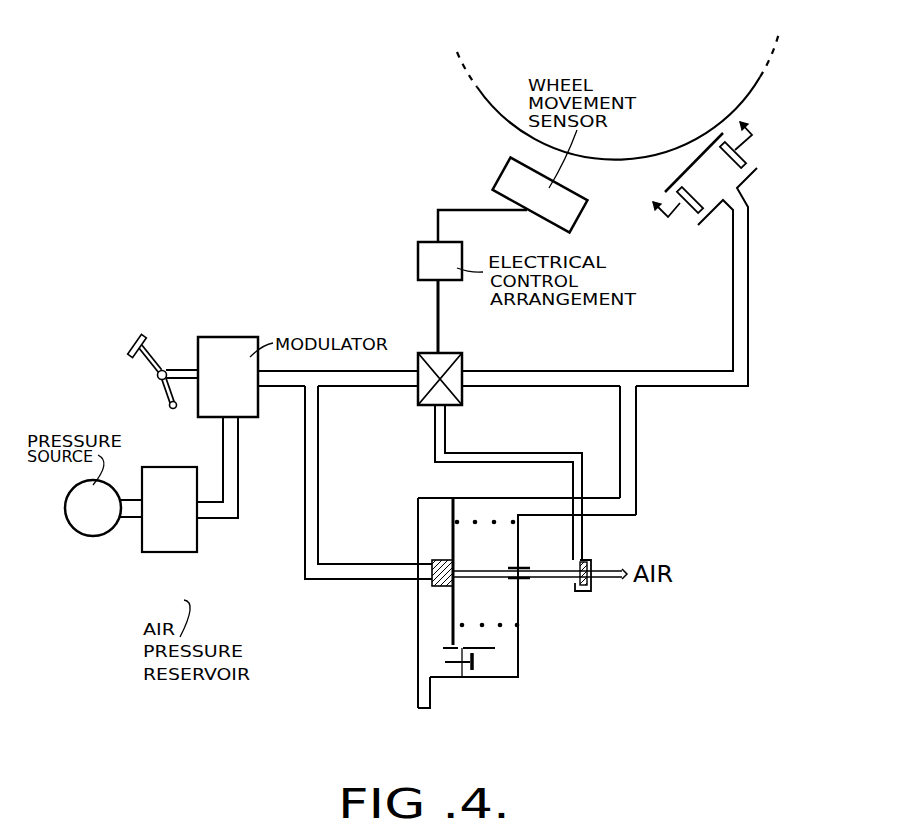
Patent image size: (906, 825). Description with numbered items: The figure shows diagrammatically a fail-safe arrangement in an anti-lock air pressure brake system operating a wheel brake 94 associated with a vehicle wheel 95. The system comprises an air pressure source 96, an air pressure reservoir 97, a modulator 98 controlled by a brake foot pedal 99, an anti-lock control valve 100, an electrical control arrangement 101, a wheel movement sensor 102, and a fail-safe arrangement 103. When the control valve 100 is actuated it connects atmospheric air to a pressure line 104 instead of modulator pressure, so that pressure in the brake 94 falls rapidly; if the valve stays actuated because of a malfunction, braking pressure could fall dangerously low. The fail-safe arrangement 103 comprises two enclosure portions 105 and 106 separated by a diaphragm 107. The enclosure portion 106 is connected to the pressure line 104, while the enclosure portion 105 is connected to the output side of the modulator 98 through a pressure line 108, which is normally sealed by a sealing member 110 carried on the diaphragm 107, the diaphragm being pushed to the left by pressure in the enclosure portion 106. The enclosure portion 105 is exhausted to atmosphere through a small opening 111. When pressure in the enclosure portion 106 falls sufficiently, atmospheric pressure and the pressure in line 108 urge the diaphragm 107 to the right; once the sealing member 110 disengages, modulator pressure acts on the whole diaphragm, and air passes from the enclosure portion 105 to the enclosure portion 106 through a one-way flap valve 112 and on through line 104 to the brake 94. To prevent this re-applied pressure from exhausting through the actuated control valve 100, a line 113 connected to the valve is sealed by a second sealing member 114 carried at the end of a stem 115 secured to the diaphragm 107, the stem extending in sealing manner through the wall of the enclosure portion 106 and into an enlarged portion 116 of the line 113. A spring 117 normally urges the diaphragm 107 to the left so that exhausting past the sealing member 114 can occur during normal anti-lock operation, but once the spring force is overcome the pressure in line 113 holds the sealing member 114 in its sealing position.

The wheel brake 94 is at (713, 182).
The vehicle wheel 95 is at (613, 157).
The air pressure source 96 is at (90, 525).
The air pressure reservoir 97 is at (170, 535).
The modulator 98 is at (237, 367).
The brake foot pedal 99 is at (137, 341).
The anti-lock control valve 100 is at (462, 362).
The electrical control arrangement 101 is at (428, 260).
The wheel movement sensor 102 is at (510, 173).
The fail-safe arrangement 103 is at (503, 680).
The pressure line 104 is at (677, 372).
The enclosure portion 105 is at (430, 602).
The enclosure portion 106 is at (498, 550).
The diaphragm 107 is at (450, 547).
The pressure line 108 is at (300, 503).
The sealing member 110 is at (432, 560).
The small opening 111 is at (418, 692).
The one-way flap valve 112 is at (475, 663).
The line 113 is at (435, 432).
The second sealing member 114 is at (592, 558).
The stem 115 is at (552, 580).
The enlarged portion 116 is at (582, 590).
The spring 117 is at (500, 625).